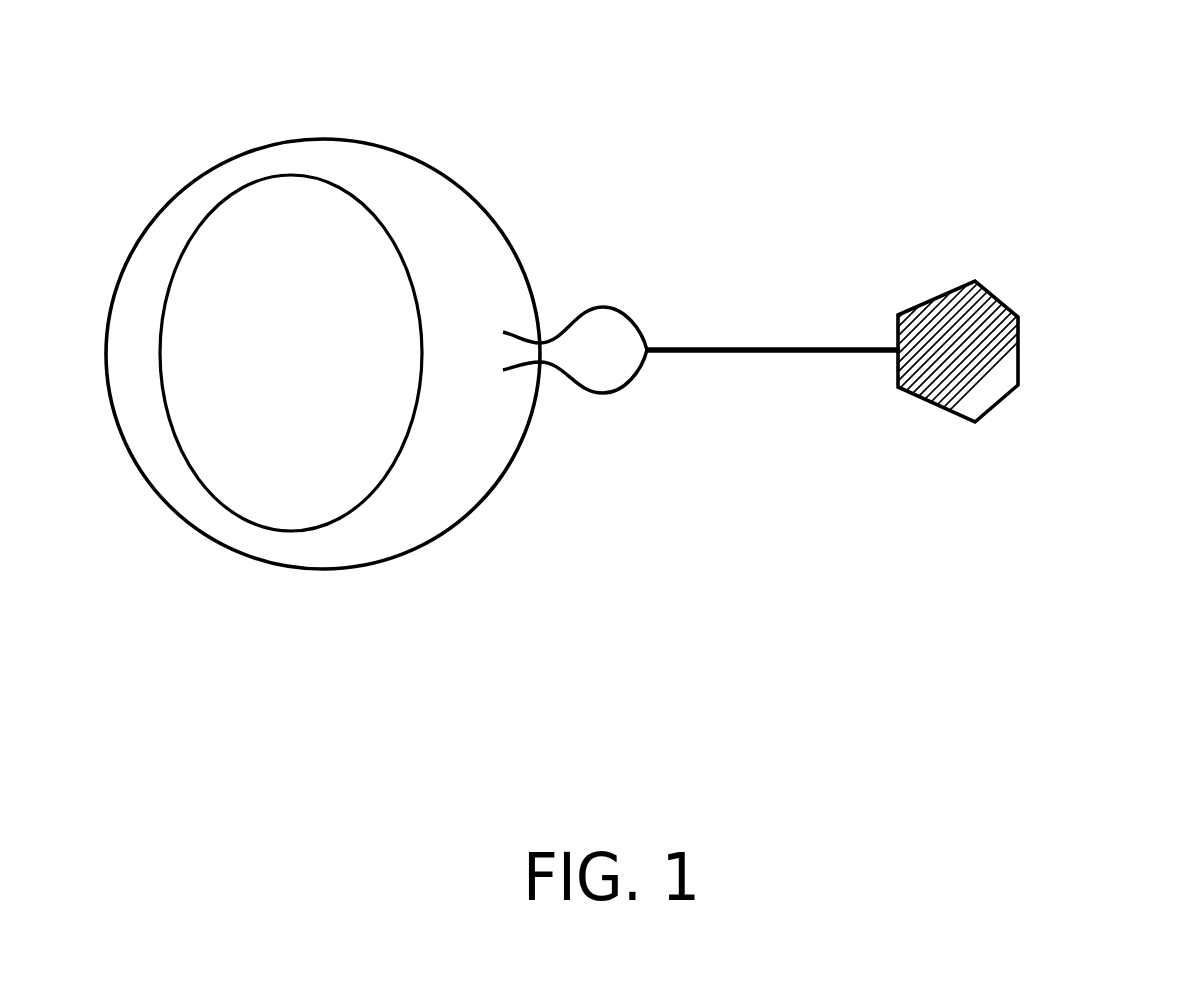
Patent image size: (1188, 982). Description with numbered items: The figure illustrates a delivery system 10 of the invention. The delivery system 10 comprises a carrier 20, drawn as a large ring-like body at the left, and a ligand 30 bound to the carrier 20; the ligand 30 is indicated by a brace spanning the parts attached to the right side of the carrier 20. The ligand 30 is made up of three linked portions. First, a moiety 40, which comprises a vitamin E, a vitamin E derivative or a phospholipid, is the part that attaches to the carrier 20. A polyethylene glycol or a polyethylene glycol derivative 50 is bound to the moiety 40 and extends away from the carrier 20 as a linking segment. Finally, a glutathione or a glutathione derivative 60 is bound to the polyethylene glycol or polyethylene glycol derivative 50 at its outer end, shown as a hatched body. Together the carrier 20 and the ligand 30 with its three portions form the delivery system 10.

The delivery system 10 is at (638, 304).
The carrier 20 is at (421, 159).
The ligand 30 is at (1017, 222).
The moiety 40 is at (603, 397).
The polyethylene glycol or polyethylene glycol derivative 50 is at (770, 353).
The glutathione or glutathione derivative 60 is at (1018, 349).